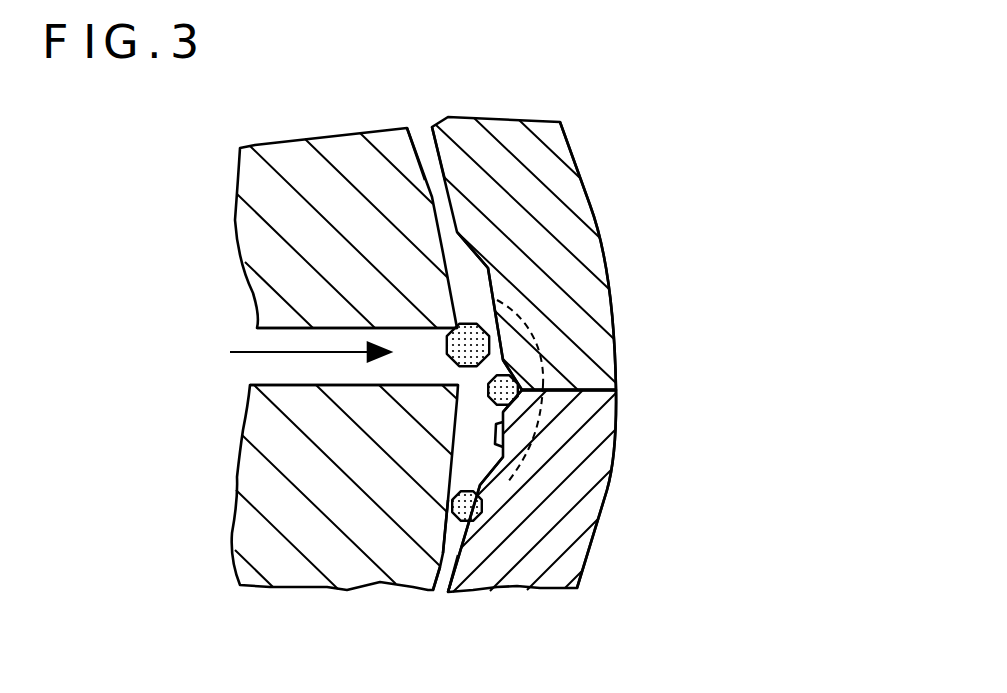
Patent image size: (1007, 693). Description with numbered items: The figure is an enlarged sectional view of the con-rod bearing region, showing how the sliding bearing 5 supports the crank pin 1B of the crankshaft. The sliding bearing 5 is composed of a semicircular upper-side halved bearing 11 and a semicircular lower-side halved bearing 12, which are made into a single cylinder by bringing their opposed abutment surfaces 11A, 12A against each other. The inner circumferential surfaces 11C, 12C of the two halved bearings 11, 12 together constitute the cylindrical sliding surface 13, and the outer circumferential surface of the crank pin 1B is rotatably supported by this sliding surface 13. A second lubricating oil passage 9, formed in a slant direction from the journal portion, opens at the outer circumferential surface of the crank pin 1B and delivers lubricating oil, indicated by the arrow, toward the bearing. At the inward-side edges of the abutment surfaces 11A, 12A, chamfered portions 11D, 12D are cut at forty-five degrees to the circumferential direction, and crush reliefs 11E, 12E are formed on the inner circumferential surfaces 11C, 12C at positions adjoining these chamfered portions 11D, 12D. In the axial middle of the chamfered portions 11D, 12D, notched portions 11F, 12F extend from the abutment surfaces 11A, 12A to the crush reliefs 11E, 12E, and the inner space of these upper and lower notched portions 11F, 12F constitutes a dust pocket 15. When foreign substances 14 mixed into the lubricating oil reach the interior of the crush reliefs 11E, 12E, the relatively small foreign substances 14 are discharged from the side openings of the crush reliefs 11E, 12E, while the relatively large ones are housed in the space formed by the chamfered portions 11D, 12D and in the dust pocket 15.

The crank pin 1B is at (226, 470).
The second lubricating oil passage 9 is at (268, 385).
The upper-side halved bearing 11 is at (567, 203).
The lower-side halved bearing 12 is at (567, 555).
The sliding bearing 5 is at (613, 550).
The inner circumferential surface 11C is at (438, 157).
The inner circumferential surface 12C is at (447, 578).
The sliding surface 13 is at (449, 565).
The crush relief 11E is at (483, 283).
The crush relief 12E is at (486, 482).
The chamfered portion 11D is at (521, 378).
The chamfered portion 12D is at (530, 403).
The abutment surface 11A is at (614, 394).
The abutment surface 12A is at (614, 386).
The notched portion 11F is at (540, 320).
The notched portion 12F is at (500, 463).
The dust pocket 15 is at (540, 404).
The foreign substances 14 is at (451, 358).